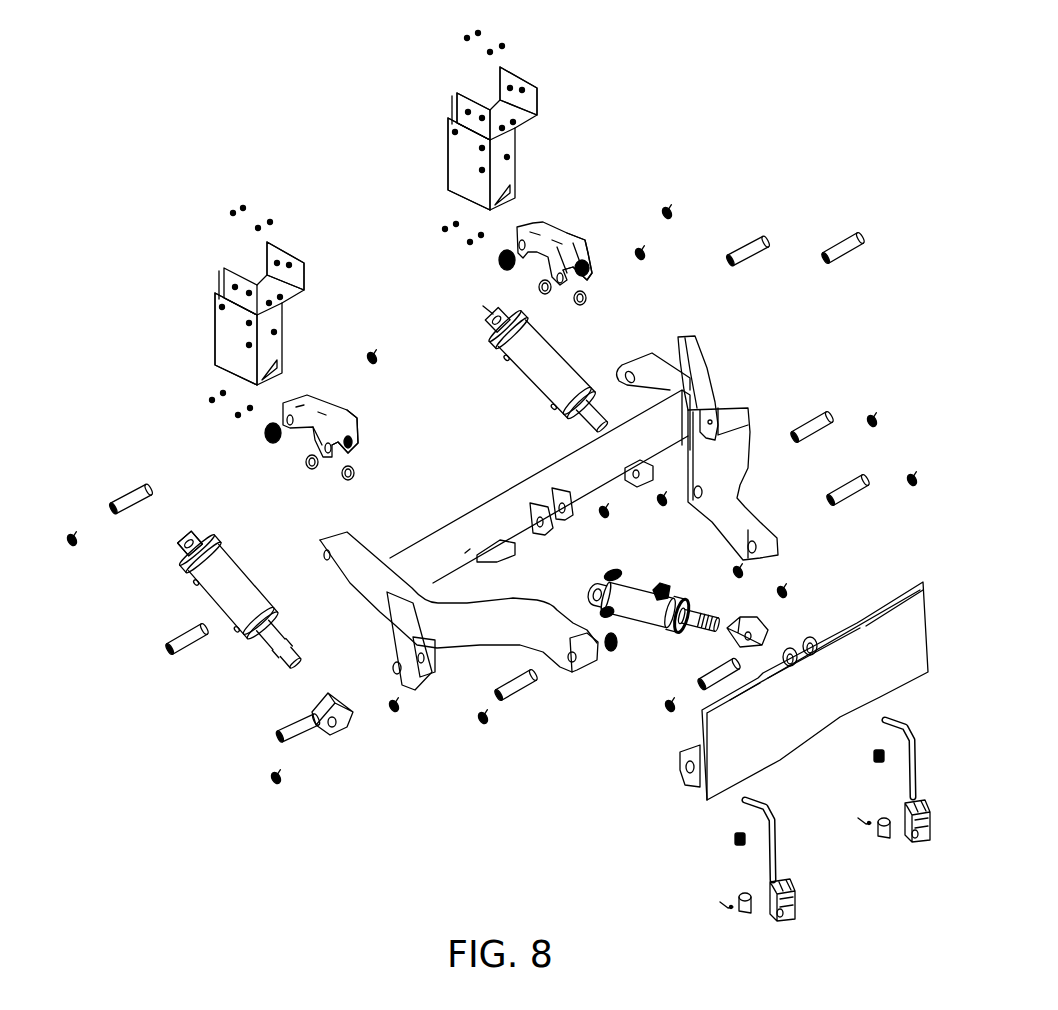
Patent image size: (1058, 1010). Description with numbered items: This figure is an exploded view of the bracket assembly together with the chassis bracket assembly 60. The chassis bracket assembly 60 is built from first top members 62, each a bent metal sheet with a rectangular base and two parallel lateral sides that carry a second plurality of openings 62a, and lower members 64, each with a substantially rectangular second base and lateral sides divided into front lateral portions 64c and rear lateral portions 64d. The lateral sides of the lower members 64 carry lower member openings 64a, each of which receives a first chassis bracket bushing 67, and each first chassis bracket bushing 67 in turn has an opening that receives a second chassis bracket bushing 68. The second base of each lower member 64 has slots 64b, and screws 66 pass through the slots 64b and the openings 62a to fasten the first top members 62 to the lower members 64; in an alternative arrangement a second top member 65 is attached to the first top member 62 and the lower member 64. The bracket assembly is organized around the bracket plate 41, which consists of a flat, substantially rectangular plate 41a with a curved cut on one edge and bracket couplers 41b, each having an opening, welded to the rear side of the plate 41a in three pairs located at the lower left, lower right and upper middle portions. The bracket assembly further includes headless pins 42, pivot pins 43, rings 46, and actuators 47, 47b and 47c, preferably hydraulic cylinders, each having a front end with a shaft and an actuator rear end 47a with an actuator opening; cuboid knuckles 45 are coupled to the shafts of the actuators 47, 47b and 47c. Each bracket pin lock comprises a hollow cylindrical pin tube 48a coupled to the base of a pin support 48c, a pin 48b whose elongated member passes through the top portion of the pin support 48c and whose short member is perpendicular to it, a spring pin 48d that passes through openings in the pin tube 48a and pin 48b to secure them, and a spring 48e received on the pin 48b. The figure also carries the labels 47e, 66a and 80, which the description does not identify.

The bracket plate 41 is at (808, 680).
The plate 41a is at (920, 616).
The bracket couplers 41b is at (808, 641).
The headless pins 42 is at (753, 248).
The pivot pins 43 is at (848, 245).
The knuckles 45 is at (640, 481).
The rings 46 is at (667, 212).
The actuator 47 is at (640, 590).
The actuator rear end 47a is at (601, 589).
The actuator 47b is at (232, 565).
The actuator 47c is at (532, 378).
The cylinder rod end 47e is at (187, 532).
The pin tube 48a is at (884, 838).
The pin 48b is at (910, 736).
The pin support 48c is at (925, 838).
The spring pin 48d is at (860, 821).
The spring 48e is at (873, 756).
The chassis bracket assembly 60 is at (524, 134).
The first top members 62 is at (464, 103).
The second plurality of openings 62a is at (521, 91).
The lower members 64 is at (538, 224).
The lower member openings 64a is at (584, 268).
The slots 64b is at (567, 236).
The front lateral portions 64c is at (352, 425).
The rear lateral portions 64d is at (290, 405).
The second top member 65 is at (452, 181).
The screws 66 is at (466, 38).
The nut 66a is at (443, 229).
The first chassis bracket bushings 67 is at (274, 437).
The second chassis bracket bushings 68 is at (348, 479).
The frame 80 is at (371, 609).